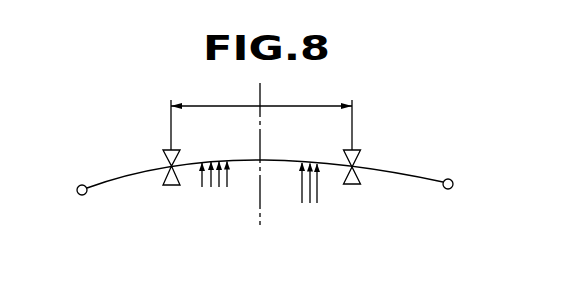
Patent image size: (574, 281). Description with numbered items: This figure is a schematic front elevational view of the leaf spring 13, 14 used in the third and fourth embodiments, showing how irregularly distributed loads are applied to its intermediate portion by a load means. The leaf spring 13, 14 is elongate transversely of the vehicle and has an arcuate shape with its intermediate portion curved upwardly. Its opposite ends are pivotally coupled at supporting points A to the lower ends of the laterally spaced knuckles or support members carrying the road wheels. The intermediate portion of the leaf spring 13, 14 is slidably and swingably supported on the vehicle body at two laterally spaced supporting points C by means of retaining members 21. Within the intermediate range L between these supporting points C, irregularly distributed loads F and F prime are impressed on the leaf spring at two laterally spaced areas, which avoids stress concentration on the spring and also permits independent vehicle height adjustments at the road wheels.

The leaf spring 13 is at (276, 154).
The leaf spring 14 is at (417, 175).
The retaining member 21 is at (168, 188).
The supporting point A is at (80, 196).
The supporting point C is at (170, 165).
The distributed load F is at (259, 194).
The intermediate range L is at (261, 119).